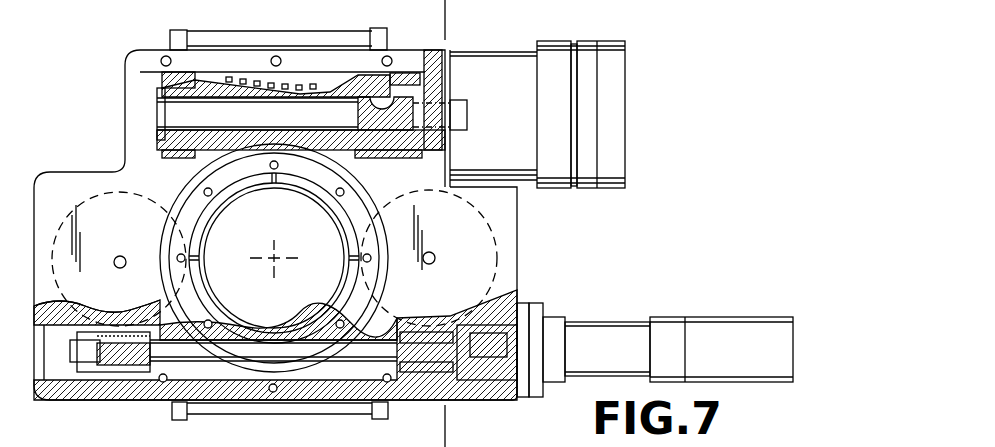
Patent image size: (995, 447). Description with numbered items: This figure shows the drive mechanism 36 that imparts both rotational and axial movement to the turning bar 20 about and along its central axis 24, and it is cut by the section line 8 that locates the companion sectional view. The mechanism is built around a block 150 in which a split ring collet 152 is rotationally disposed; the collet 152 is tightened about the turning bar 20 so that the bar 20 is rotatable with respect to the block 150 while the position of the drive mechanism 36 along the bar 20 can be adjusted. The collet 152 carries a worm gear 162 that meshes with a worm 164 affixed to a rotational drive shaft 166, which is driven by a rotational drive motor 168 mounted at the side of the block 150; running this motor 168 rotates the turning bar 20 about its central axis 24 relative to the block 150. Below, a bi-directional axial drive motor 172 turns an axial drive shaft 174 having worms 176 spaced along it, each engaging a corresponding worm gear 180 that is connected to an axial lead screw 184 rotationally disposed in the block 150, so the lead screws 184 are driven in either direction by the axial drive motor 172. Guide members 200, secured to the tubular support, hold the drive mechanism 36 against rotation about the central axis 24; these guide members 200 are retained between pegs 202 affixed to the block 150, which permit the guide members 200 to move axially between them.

The section line 8 is at (412, 9).
The turning bar 20 is at (258, 294).
The central axis 24 is at (288, 244).
The drive mechanism 36 is at (93, 128).
The block 150 is at (88, 402).
The split ring collet 152 is at (328, 210).
The worm gear 162 is at (126, 160).
The worm 164 is at (247, 74).
The rotational drive shaft 166 is at (157, 118).
The rotational drive motor 168 is at (622, 115).
The bi-directional axial drive motor 172 is at (672, 318).
The axial drive shaft 174 is at (357, 353).
The worms 176 is at (130, 376).
The worm gears 180 is at (70, 180).
The axial lead screws 184 is at (126, 260).
The guide members 200 is at (296, 30).
The pegs 202 is at (172, 32).